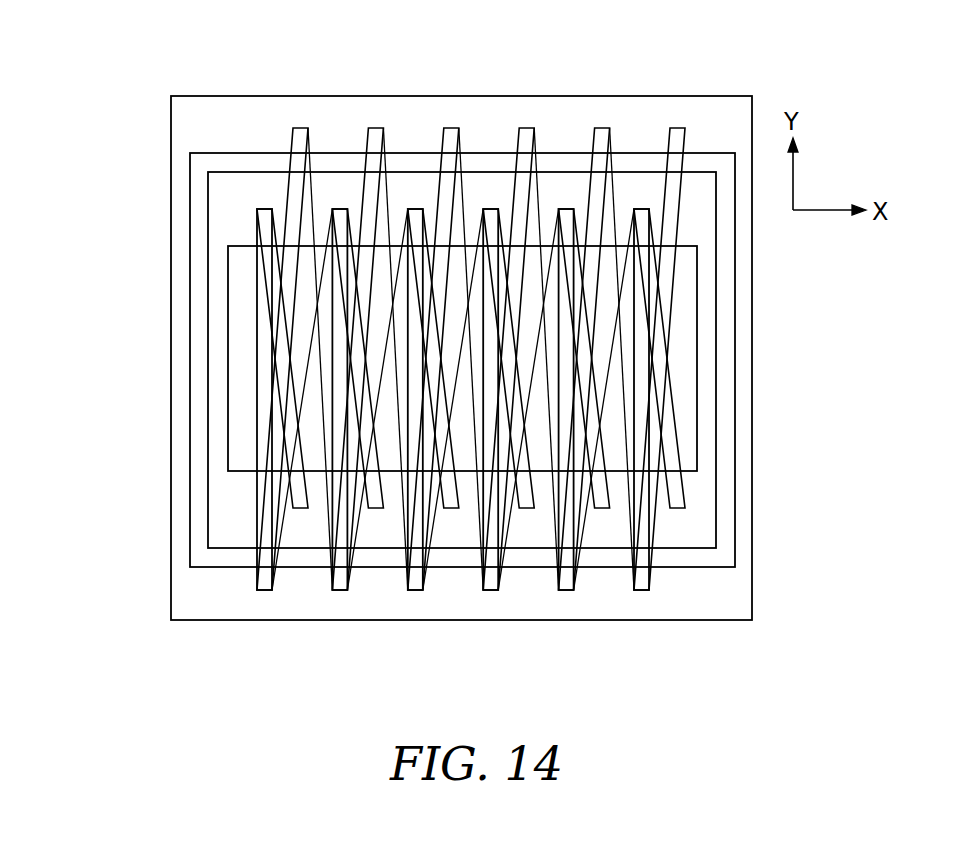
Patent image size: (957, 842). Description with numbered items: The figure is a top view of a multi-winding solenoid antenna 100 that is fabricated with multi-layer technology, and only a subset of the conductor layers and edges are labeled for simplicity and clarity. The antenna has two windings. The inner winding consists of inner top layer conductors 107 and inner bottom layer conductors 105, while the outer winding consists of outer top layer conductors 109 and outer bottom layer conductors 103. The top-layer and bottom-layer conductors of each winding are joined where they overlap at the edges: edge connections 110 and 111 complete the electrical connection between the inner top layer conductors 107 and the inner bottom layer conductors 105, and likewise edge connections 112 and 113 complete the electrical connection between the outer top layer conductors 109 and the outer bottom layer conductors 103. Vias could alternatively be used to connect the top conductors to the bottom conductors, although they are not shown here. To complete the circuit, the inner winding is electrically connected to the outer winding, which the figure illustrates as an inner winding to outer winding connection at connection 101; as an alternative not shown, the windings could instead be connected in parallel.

The solenoid antenna 100 is at (100, 124).
The connection 101 is at (262, 595).
The outer bottom layer conductors 103 is at (552, 556).
The inner bottom layer conductors 105 is at (312, 508).
The inner top layer conductors 107 is at (353, 212).
The outer top layer conductors 109 is at (518, 165).
The edge connection 110 is at (345, 227).
The edge connection 111 is at (297, 507).
The edge connection 112 is at (545, 170).
The edge connection 113 is at (490, 560).